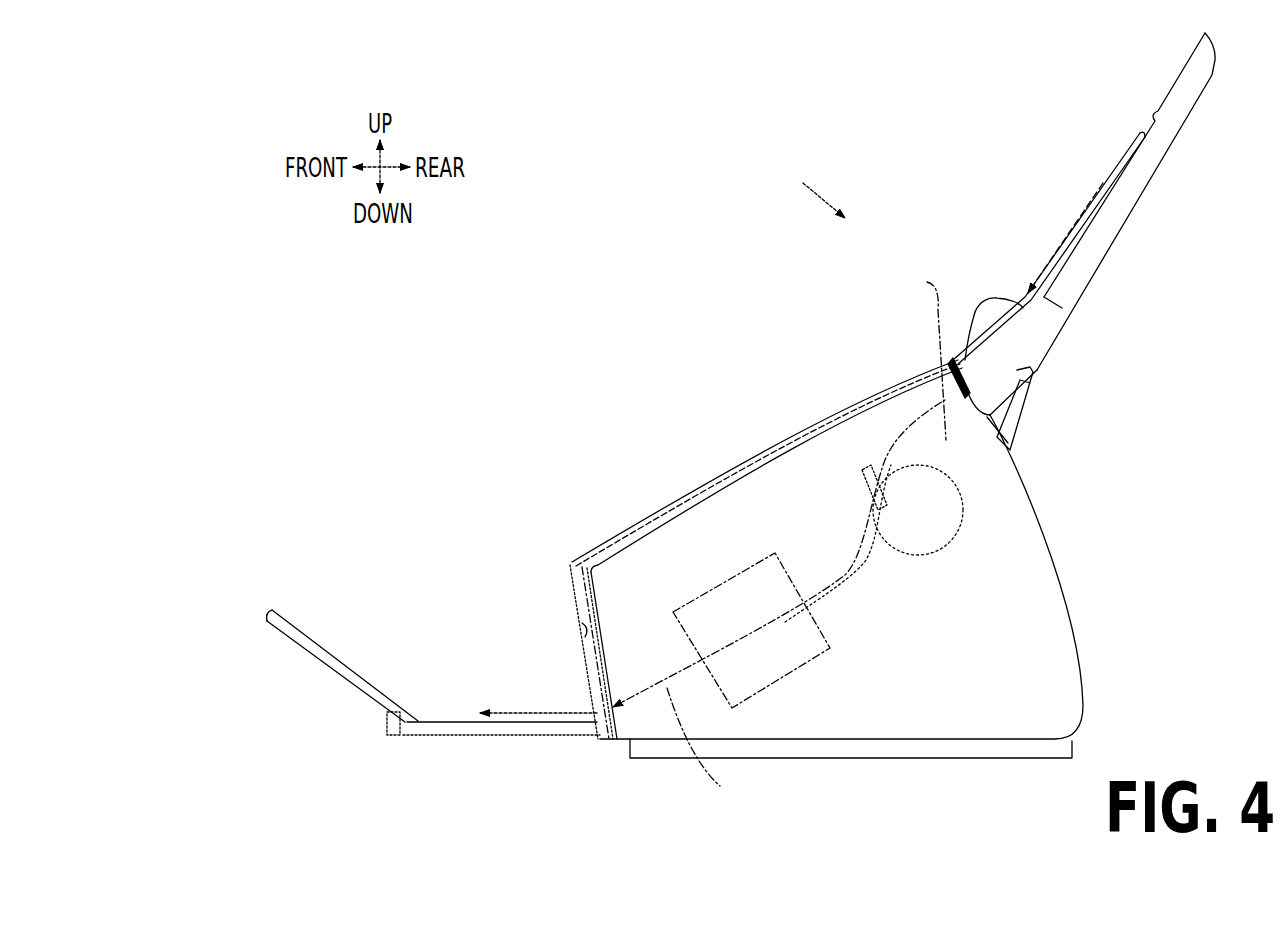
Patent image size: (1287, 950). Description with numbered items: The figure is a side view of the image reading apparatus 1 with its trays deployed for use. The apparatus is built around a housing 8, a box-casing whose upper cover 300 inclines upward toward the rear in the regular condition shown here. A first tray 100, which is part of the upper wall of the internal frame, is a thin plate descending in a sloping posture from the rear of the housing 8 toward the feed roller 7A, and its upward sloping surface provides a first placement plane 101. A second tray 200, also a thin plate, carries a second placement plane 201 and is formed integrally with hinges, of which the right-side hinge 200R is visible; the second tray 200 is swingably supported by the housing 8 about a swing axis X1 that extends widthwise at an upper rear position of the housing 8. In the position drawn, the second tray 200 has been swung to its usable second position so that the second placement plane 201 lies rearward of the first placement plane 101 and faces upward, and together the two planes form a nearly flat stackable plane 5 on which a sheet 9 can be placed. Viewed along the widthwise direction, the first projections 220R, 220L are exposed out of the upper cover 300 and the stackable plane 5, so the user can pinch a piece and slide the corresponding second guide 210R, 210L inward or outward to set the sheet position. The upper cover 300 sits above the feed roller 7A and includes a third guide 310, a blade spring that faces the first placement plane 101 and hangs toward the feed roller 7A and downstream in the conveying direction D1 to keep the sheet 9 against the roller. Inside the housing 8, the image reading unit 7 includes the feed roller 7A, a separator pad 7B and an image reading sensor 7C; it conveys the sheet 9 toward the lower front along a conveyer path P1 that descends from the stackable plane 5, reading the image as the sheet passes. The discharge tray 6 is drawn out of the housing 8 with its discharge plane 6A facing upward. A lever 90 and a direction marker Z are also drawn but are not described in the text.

The image reading apparatus 1 is at (635, 280).
The stackable plane 5 is at (1120, 164).
The discharge tray 6 is at (423, 740).
The discharge plane 6A is at (452, 722).
The image reading unit 7 is at (845, 608).
The feed roller 7A is at (929, 526).
The separator pad 7B is at (858, 490).
The image reading sensor 7C is at (779, 667).
The housing 8 is at (1057, 534).
The sheet 9 is at (1137, 133).
The lever 90 is at (1017, 413).
The first tray 100 is at (910, 372).
The first placement plane 101 is at (895, 415).
The second tray 200 is at (1174, 151).
The hinge 200R is at (1006, 350).
The second placement plane 201 is at (1108, 181).
The second guide 210R is at (1004, 292).
The second guide 210L is at (966, 253).
The first projection 220R is at (990, 316).
The first projection 220L is at (921, 204).
The upper cover 300 is at (692, 478).
The third guide 310 is at (875, 440).
The conveying direction D1 is at (1065, 238).
The swing axis X1 is at (925, 352).
The conveyer path P1 is at (706, 744).
The direction Z is at (815, 192).